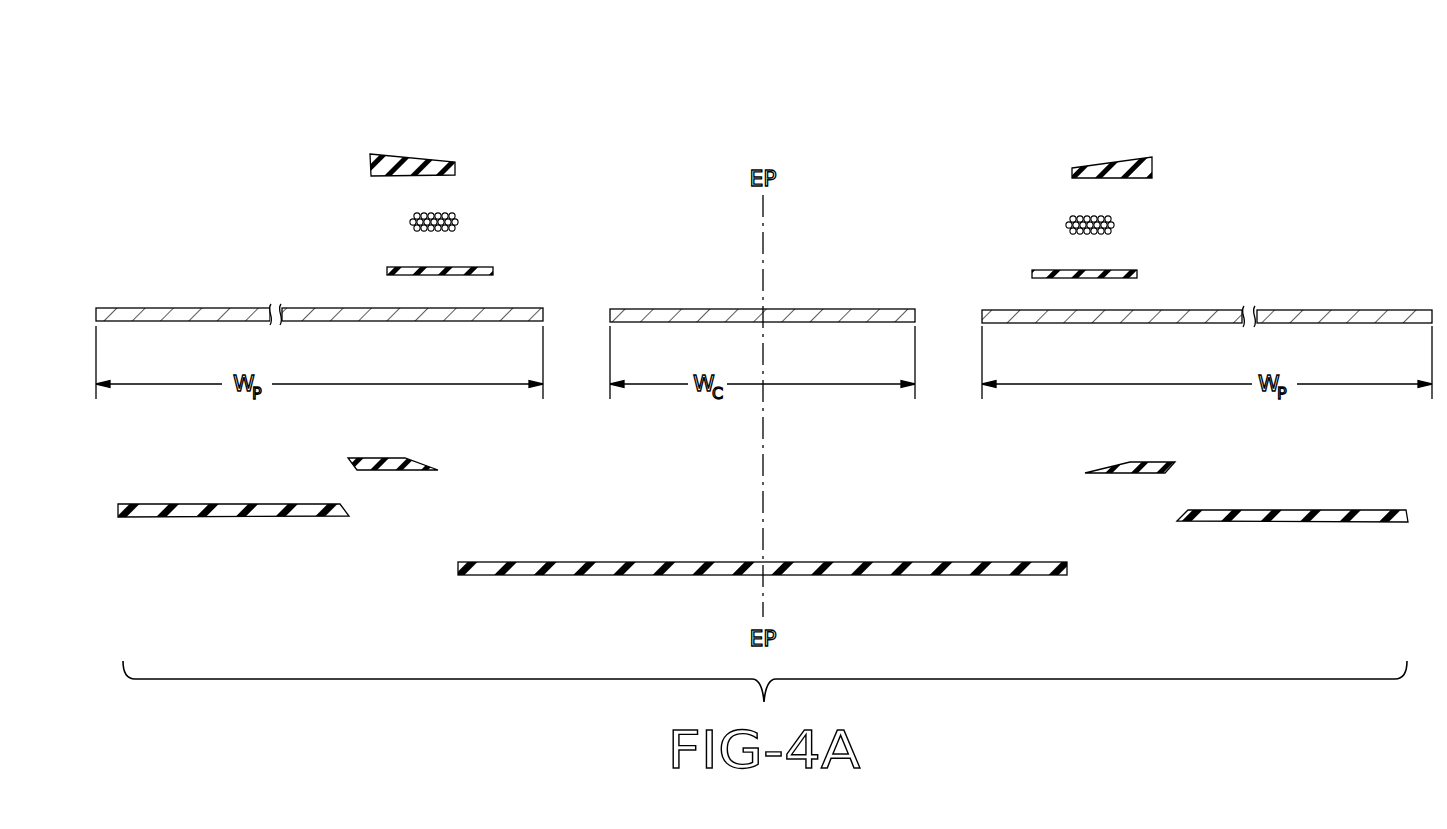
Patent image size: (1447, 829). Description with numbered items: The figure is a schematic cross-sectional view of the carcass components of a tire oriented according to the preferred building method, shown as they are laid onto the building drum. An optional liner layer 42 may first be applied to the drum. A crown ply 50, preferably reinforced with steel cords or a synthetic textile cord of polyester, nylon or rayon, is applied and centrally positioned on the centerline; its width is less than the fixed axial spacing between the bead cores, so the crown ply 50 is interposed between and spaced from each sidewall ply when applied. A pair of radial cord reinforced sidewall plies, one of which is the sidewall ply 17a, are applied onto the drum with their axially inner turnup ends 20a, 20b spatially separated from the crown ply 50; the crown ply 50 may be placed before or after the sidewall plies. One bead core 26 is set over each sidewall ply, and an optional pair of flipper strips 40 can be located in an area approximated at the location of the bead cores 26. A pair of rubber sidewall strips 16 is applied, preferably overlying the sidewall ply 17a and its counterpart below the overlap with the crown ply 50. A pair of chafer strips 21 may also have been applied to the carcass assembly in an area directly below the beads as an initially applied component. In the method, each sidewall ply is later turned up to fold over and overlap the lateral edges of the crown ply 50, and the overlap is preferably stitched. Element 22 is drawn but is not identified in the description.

The rubber sidewall strip 16 is at (232, 518).
The sidewall ply 17a is at (150, 313).
The axially inner turnup end 20a is at (545, 311).
The axially inner turnup end 20b is at (982, 312).
The chafer strip 21 is at (375, 462).
The wedge strip 22 is at (418, 158).
The bead core 26 is at (456, 219).
The flipper strip 40 is at (395, 267).
The liner layer 42 is at (947, 562).
The crown ply 50 is at (686, 312).